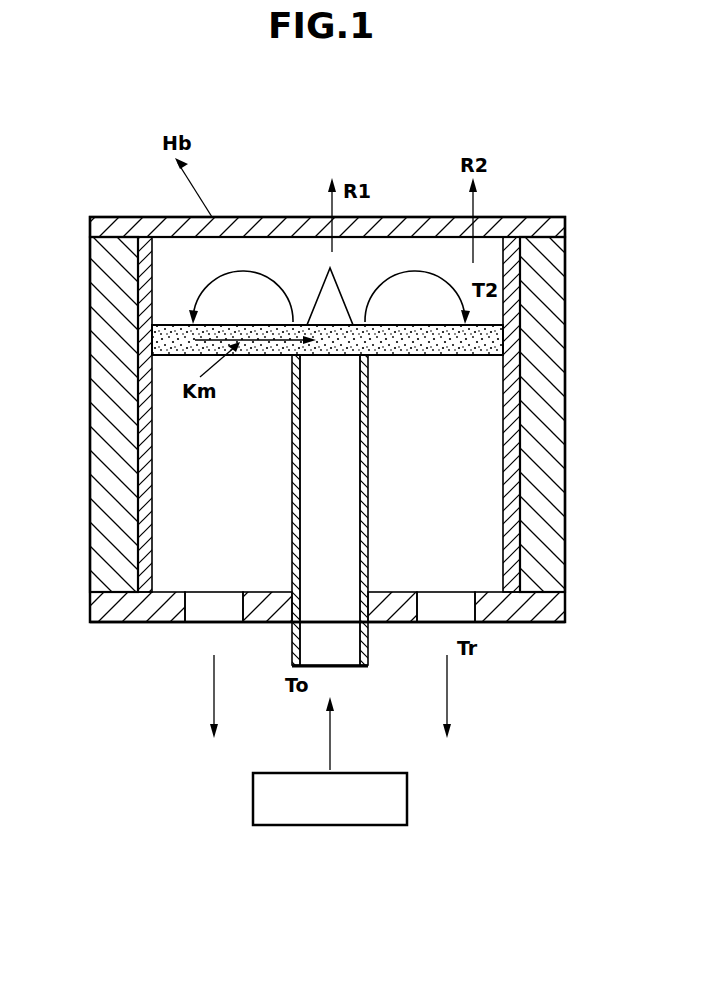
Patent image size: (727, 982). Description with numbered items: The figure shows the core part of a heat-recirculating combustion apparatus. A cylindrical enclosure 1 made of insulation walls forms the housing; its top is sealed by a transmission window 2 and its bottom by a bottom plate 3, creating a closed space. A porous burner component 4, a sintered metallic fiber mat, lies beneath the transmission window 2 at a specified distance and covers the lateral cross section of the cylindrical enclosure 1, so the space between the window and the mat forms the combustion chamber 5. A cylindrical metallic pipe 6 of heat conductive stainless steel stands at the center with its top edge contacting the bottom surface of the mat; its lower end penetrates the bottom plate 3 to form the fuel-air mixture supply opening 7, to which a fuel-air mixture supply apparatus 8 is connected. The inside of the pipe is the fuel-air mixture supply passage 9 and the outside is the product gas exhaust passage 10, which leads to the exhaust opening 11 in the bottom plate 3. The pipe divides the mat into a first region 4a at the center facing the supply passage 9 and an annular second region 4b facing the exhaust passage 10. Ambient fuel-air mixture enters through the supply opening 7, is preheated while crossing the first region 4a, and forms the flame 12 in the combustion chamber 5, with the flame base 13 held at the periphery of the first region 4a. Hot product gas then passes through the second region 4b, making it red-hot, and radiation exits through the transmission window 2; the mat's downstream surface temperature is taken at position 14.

The cylindrical enclosure 1 is at (567, 458).
The transmission window 2 is at (505, 217).
The bottom plate 3 is at (118, 622).
The porous burner component 4 is at (166, 341).
The first region 4a is at (330, 362).
The second region 4b is at (467, 343).
The combustion chamber 5 is at (187, 257).
The cylindrical metallic pipe 6 is at (292, 508).
The fuel-air mixture supply opening 7 is at (352, 653).
The fuel-air mixture supply apparatus 8 is at (407, 800).
The fuel-air mixture supply passage 9 is at (348, 442).
The product gas exhaust passage 10 is at (178, 528).
The exhaust opening 11 is at (197, 625).
The flame 12 is at (302, 268).
The flame base 13 is at (360, 323).
The position 14 is at (482, 309).